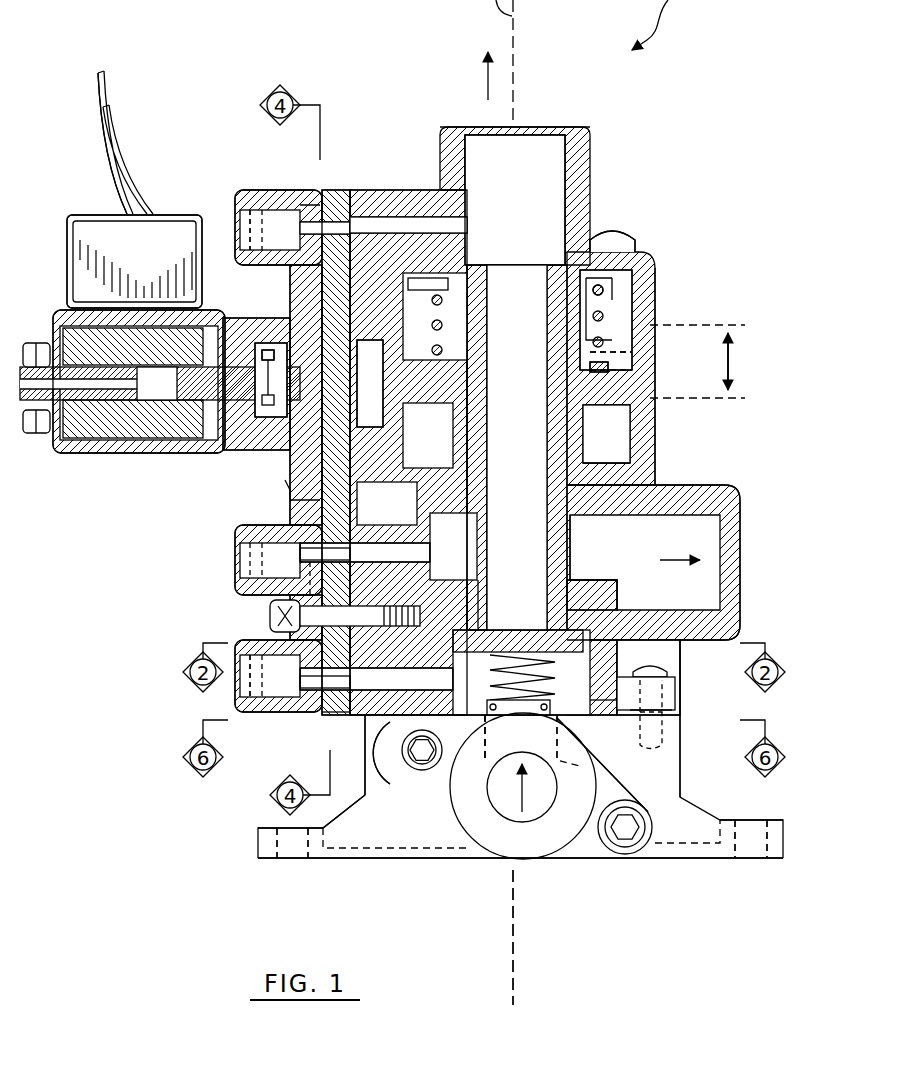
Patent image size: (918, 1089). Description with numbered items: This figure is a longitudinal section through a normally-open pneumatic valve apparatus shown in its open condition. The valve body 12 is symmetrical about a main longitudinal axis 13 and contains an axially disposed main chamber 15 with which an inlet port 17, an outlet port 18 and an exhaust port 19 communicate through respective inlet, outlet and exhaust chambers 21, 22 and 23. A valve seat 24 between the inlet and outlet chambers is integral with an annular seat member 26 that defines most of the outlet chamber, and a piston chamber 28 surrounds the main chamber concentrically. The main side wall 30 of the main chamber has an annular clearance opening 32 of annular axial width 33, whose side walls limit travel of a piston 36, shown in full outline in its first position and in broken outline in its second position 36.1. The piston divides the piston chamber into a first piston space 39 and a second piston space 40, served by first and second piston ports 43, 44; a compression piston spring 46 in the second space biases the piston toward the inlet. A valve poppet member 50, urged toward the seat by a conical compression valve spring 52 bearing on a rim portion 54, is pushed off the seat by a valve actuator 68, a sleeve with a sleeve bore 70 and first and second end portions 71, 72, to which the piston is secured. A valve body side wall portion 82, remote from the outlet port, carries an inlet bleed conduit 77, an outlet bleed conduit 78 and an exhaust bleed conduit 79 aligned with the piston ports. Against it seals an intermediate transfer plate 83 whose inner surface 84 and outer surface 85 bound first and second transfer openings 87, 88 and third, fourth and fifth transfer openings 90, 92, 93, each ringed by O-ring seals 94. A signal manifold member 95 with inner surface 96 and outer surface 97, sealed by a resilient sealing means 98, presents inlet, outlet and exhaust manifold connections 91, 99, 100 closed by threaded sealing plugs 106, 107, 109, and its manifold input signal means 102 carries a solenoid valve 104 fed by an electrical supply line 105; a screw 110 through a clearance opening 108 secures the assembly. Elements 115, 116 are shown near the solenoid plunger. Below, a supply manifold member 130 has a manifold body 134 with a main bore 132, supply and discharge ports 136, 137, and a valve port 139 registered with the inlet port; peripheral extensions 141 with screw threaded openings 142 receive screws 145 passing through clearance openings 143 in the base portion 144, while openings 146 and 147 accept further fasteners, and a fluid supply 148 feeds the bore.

The valve body 12 is at (665, 412).
The main longitudinal axis 13 is at (530, 945).
The main chamber 15 is at (598, 235).
The inlet port 17 is at (520, 712).
The outlet port 18 is at (710, 542).
The exhaust port 19 is at (478, 140).
The inlet chamber 21 is at (600, 705).
The outlet chamber 22 is at (587, 548).
The exhaust chamber 23 is at (555, 168).
The valve seat 24 is at (620, 640).
The annular seat member 26 is at (598, 578).
The piston chamber 28 is at (622, 436).
The main side wall 30 is at (632, 405).
The annular clearance opening 32 is at (472, 352).
The annular axial width 33 is at (735, 368).
The piston 36 is at (618, 375).
The second extreme position of piston 36.1 is at (632, 347).
The first piston space 39 is at (626, 458).
The second piston space 40 is at (620, 322).
The first piston port 43 is at (410, 453).
The second piston port 44 is at (447, 292).
The compression piston spring 46 is at (610, 303).
The valve poppet member 50 is at (555, 662).
The conical compression valve spring 52 is at (550, 712).
The rim portion 54 is at (490, 720).
The valve actuator 68 is at (508, 288).
The sleeve bore 70 is at (505, 450).
The first end portion 71 is at (497, 633).
The second end portion 72 is at (550, 280).
The inlet bleed conduit 77 is at (440, 678).
The outlet bleed conduit 78 is at (420, 555).
The exhaust bleed conduit 79 is at (450, 226).
The valve body side wall portion 82 is at (346, 192).
The intermediate transfer plate 83 is at (335, 190).
The inner surface 84 is at (370, 716).
The outer surface 85 is at (322, 712).
The first transfer opening 87 is at (290, 462).
The second transfer opening 88 is at (300, 292).
The third transfer opening 90 is at (320, 676).
The inlet manifold connection 91 is at (262, 712).
The fourth transfer opening 92 is at (320, 553).
The fifth transfer opening 93 is at (330, 228).
The O-ring seals 94 is at (360, 519).
The signal manifold member 95 is at (232, 500).
The inner surface 96 is at (350, 383).
The outer surface 97 is at (287, 485).
The signal manifold resilient sealing means 98 is at (290, 505).
The outlet manifold connection 99 is at (245, 592).
The exhaust manifold connection 100 is at (252, 190).
The manifold input signal means 102 is at (225, 456).
The solenoid valve 104 is at (105, 458).
The electrical supply line 105 is at (130, 115).
The threaded sealing plug 106 is at (240, 690).
The threaded sealing plug 107 is at (245, 553).
The clearance openings 108 is at (320, 585).
The threaded sealing plug 109 is at (250, 230).
The screw 110 is at (268, 615).
The valve element 115 is at (285, 330).
The valve element 116 is at (286, 340).
The supply manifold member 130 is at (702, 790).
The main bore 132 is at (540, 815).
The manifold body 134 is at (405, 860).
The supply port 136 is at (462, 818).
The discharge port 137 is at (465, 815).
The valve port 139 is at (592, 762).
The peripheral extensions 141 is at (690, 785).
The screw threaded openings 142 is at (667, 735).
The clearance openings 143 is at (678, 708).
The base portion 144 is at (680, 692).
The screws 145 is at (662, 672).
The openings 146 is at (628, 850).
The openings 147 is at (752, 868).
The fluid supply 148 is at (560, 855).